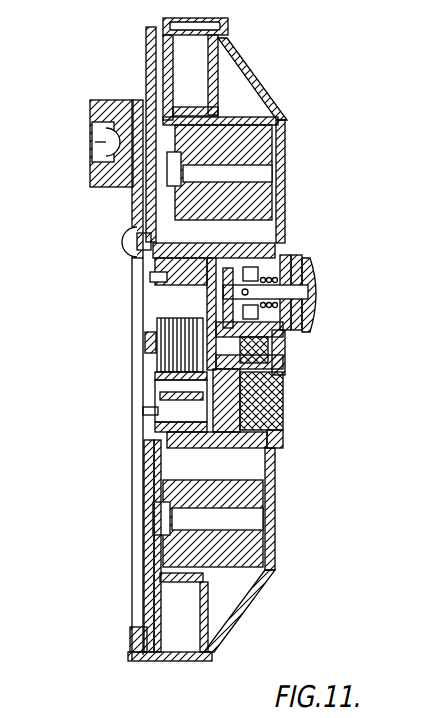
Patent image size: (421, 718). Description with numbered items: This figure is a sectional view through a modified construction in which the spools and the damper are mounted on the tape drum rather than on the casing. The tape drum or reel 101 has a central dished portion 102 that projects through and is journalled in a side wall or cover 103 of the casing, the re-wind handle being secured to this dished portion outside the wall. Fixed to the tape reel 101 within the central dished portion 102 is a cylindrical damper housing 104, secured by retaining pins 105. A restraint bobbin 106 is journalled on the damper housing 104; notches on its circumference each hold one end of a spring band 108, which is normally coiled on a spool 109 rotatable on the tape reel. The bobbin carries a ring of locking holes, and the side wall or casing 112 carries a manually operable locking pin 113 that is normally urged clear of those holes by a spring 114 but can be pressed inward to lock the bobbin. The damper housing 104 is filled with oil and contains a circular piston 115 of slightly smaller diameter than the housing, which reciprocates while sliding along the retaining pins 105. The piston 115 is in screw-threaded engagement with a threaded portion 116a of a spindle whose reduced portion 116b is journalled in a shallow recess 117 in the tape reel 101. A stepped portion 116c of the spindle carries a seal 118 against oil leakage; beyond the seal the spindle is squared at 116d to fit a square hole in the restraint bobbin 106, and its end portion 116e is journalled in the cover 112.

The tape drum 101 is at (220, 78).
The central dished portion 102 is at (137, 262).
The side wall or cover 103 is at (147, 477).
The damper housing 104 is at (218, 250).
The retaining pins 105 is at (147, 418).
The restraint bobbin 106 is at (243, 460).
The spring band 108 is at (272, 480).
The spool 109 is at (262, 147).
The side wall or casing 112 is at (253, 597).
The locking pin 113 is at (283, 292).
The spring 114 is at (277, 260).
The piston 115 is at (281, 422).
The threaded portion 116a is at (175, 374).
The reduced portion 116b is at (147, 340).
The stepped portion 116c is at (160, 320).
The squared portion 116d is at (283, 360).
The end portion 116e is at (288, 346).
The shallow recess 117 is at (165, 346).
The seal 118 is at (282, 384).